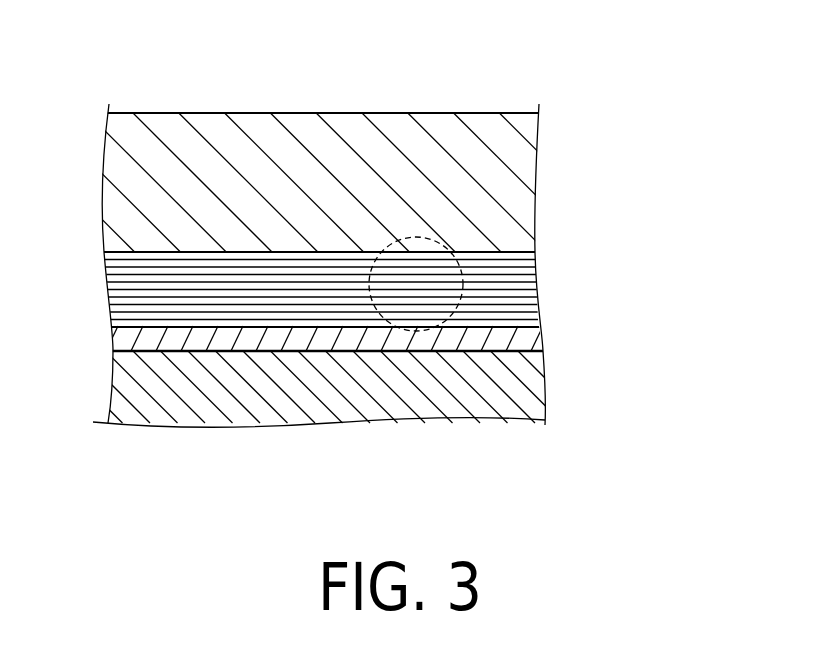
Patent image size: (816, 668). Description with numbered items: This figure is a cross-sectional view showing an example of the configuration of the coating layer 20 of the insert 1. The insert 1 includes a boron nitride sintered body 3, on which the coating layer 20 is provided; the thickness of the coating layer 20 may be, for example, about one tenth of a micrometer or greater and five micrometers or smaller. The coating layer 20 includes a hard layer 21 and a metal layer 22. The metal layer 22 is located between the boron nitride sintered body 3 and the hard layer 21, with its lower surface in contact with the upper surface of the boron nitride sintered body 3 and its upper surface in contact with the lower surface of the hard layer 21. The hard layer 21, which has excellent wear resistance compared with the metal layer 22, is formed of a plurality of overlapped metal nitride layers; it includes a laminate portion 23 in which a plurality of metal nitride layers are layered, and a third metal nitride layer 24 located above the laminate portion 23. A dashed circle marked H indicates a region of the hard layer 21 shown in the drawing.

The insert 1 is at (97, 53).
The boron nitride sintered body 3 is at (318, 388).
The coating layer 20 is at (369, 234).
The hard layer 21 is at (342, 220).
The metal layer 22 is at (382, 340).
The laminate portion 23 is at (360, 294).
The third metal nitride layer 24 is at (523, 162).
The region H is at (419, 237).